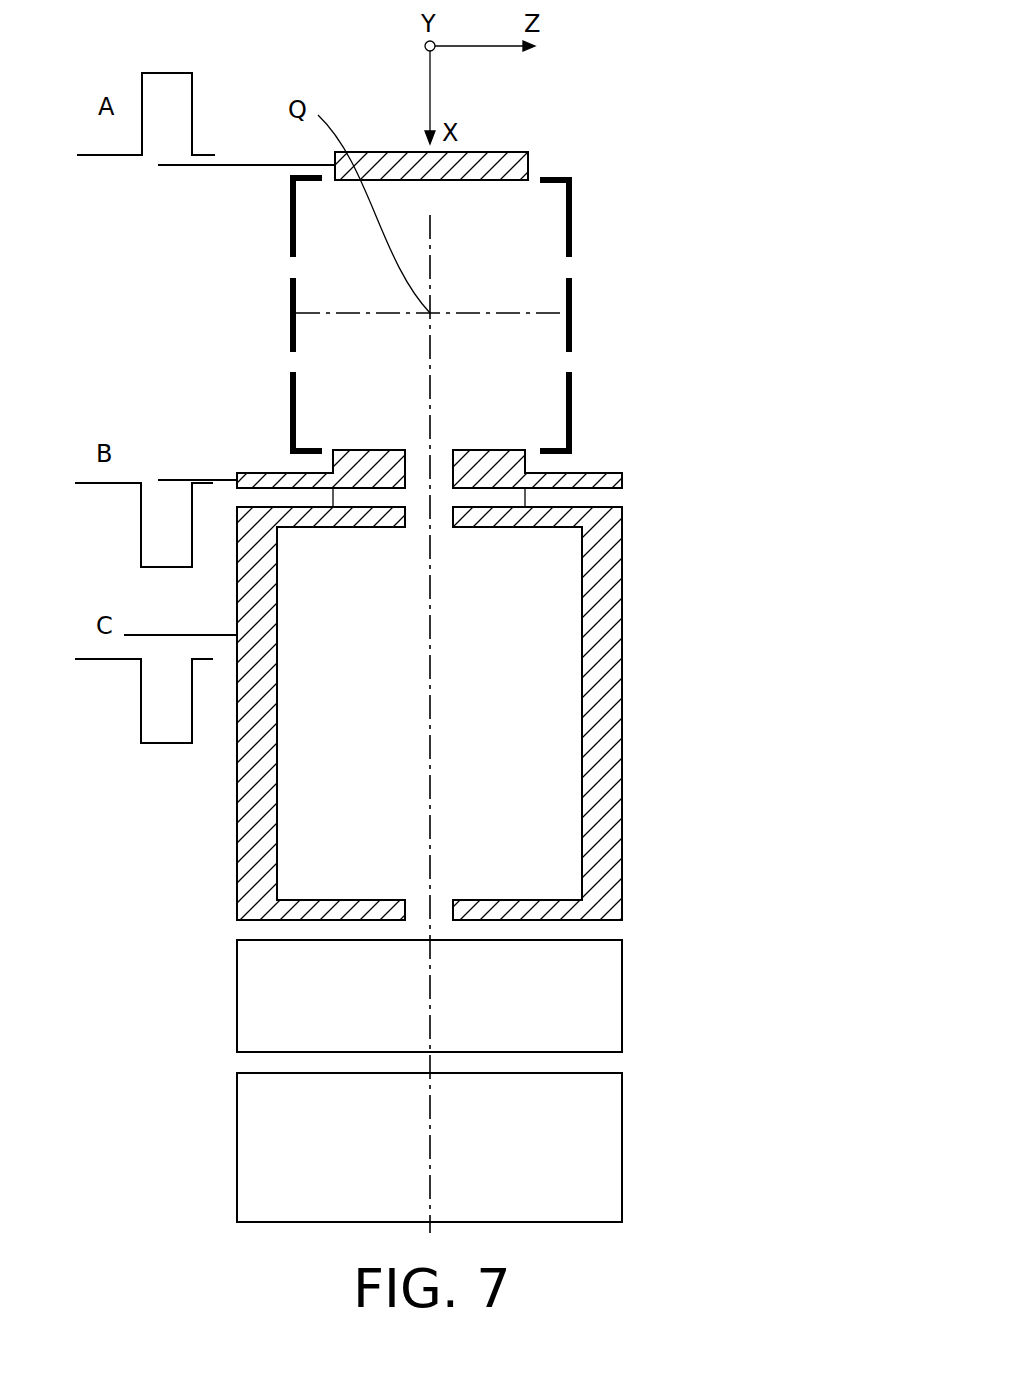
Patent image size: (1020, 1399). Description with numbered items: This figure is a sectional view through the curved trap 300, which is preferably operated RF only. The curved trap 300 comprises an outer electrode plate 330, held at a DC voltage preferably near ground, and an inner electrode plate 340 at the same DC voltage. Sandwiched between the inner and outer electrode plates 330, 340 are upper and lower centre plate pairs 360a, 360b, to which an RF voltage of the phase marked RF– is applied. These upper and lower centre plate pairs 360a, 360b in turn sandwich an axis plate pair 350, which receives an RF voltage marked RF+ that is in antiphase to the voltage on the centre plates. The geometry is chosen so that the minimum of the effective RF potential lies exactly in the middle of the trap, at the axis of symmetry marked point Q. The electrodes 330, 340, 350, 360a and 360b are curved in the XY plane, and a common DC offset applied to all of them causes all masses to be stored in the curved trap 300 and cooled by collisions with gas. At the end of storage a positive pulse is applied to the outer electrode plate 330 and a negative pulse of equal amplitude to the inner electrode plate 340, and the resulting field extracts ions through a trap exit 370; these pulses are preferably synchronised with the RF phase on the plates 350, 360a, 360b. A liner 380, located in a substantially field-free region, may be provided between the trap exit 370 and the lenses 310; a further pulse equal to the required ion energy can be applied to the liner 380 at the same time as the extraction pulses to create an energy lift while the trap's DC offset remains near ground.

The curved trap 300 is at (703, 374).
The lenses 310 is at (610, 1012).
The outer electrode plate 330 is at (507, 150).
The inner electrode plate 340 is at (624, 484).
The axis plate pair 350 is at (291, 347).
The upper centre plate pair 360a is at (291, 253).
The lower centre plate pair 360b is at (291, 441).
The trap exit 370 is at (415, 477).
The liner 380 is at (610, 716).